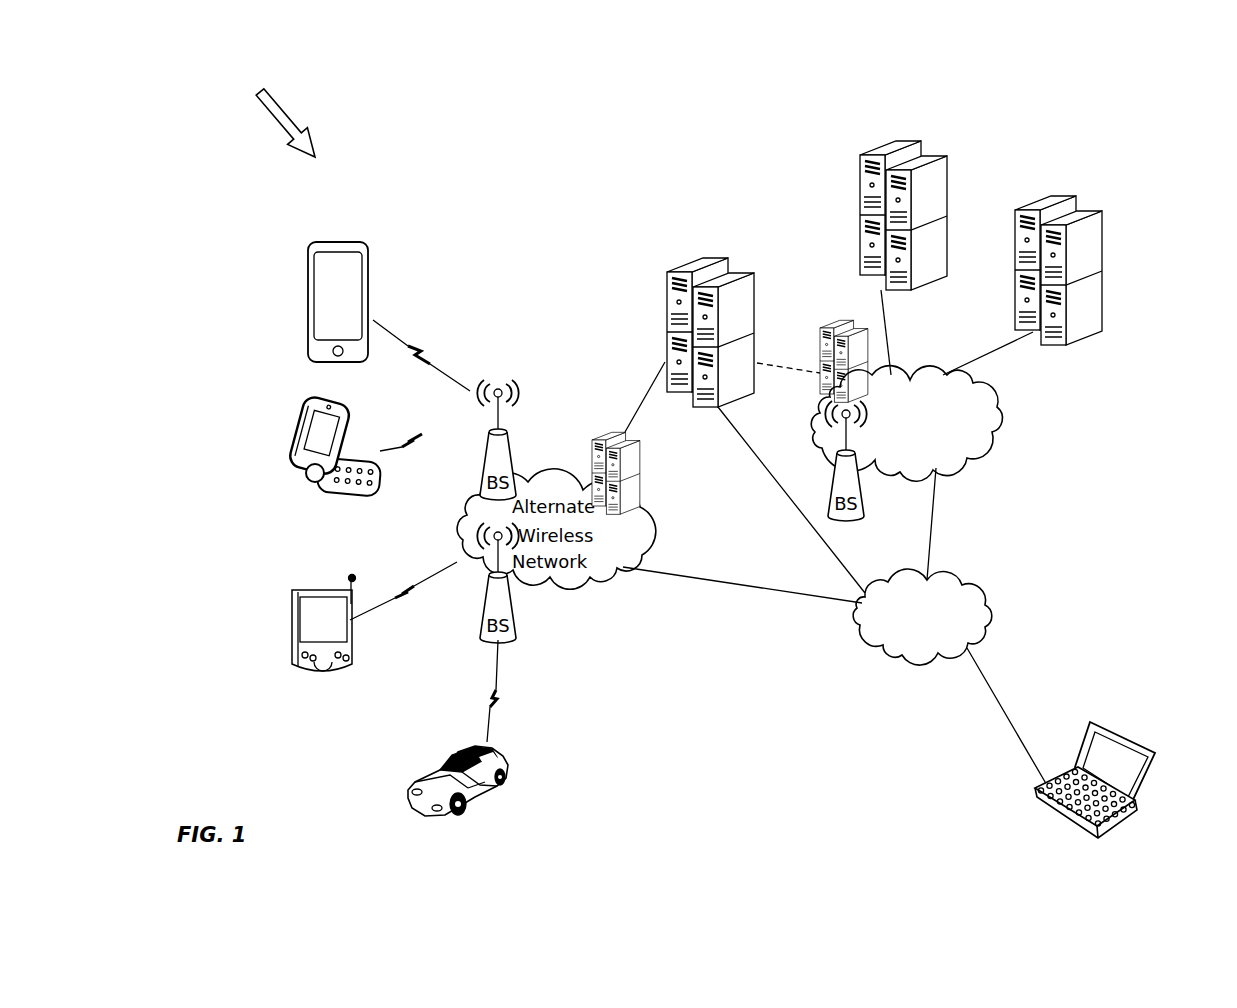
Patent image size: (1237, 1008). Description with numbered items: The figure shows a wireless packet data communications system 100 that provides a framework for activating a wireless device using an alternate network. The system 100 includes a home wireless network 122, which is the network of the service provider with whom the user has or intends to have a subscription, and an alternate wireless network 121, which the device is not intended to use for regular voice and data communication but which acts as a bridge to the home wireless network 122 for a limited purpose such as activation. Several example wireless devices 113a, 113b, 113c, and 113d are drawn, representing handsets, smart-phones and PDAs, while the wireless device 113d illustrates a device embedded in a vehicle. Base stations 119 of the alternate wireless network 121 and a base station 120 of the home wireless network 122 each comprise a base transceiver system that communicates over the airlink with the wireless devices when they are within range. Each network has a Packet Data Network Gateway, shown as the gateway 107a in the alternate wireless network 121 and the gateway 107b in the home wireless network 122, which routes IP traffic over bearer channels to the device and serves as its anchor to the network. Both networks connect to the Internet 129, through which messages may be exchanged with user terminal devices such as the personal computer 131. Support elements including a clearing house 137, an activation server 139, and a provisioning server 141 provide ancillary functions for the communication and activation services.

The system 100 is at (273, 114).
The wireless device 113a is at (308, 299).
The wireless device 113b is at (285, 442).
The wireless device 113c is at (292, 620).
The wireless device 113d is at (430, 759).
The base station 119 is at (482, 456).
The base station 120 is at (865, 508).
The alternate wireless network 121 is at (593, 483).
The gateway 107a is at (641, 460).
The gateway 107b is at (820, 344).
The home wireless network 122 is at (995, 432).
The Internet 129 is at (902, 657).
The personal computer 131 is at (1066, 822).
The clearing house 137 is at (663, 293).
The activation server 139 is at (896, 133).
The provisioning server 141 is at (1103, 271).